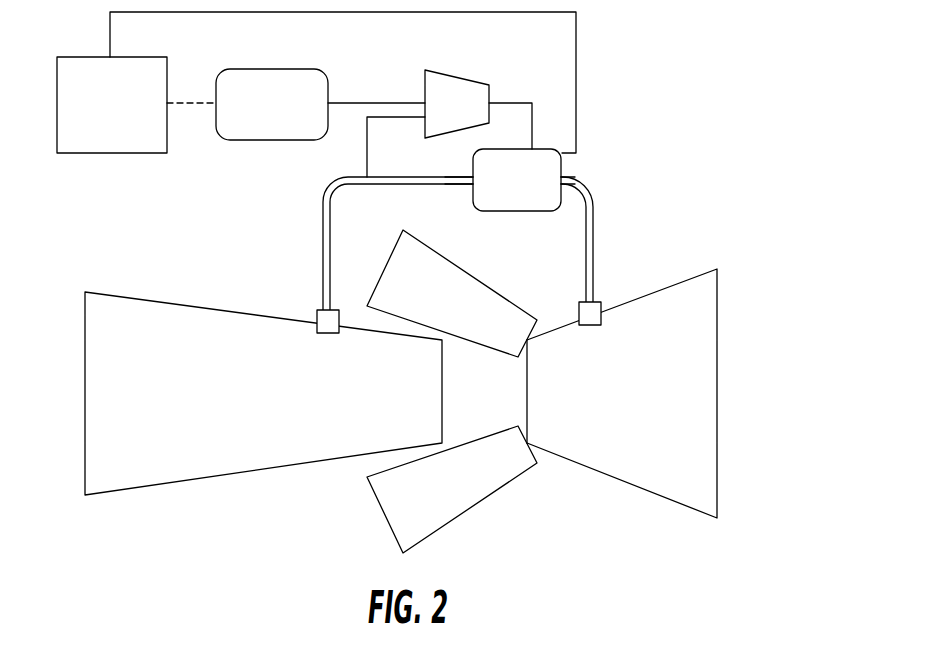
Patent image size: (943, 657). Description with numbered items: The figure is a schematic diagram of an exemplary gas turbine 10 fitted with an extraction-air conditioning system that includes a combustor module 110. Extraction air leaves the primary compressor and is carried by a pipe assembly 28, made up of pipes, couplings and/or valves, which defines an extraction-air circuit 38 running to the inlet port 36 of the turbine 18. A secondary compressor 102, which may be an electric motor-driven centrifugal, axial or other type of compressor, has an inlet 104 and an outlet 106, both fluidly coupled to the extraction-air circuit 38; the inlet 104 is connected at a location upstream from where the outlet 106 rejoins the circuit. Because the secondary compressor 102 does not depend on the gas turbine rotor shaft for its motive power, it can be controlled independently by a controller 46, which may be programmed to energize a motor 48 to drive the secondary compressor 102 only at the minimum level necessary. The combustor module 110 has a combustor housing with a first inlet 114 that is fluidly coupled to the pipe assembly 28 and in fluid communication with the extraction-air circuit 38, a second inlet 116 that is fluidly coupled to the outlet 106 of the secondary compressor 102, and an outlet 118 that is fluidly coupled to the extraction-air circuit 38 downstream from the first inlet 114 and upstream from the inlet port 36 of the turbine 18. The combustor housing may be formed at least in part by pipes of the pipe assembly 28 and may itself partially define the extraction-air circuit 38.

The gas turbine 10 is at (121, 258).
The turbine 18 is at (644, 502).
The pipe assembly 28 is at (314, 269).
The inlet port 36 is at (597, 311).
The extraction-air circuit 38 is at (323, 210).
The controller 46 is at (82, 116).
The motor 48 is at (284, 116).
The secondary compressor 102 is at (474, 114).
The inlet 104 is at (424, 118).
The outlet 106 is at (490, 101).
The combustor module 110 is at (533, 191).
The first inlet 114 is at (472, 188).
The second inlet 116 is at (535, 149).
The outlet 118 is at (563, 176).